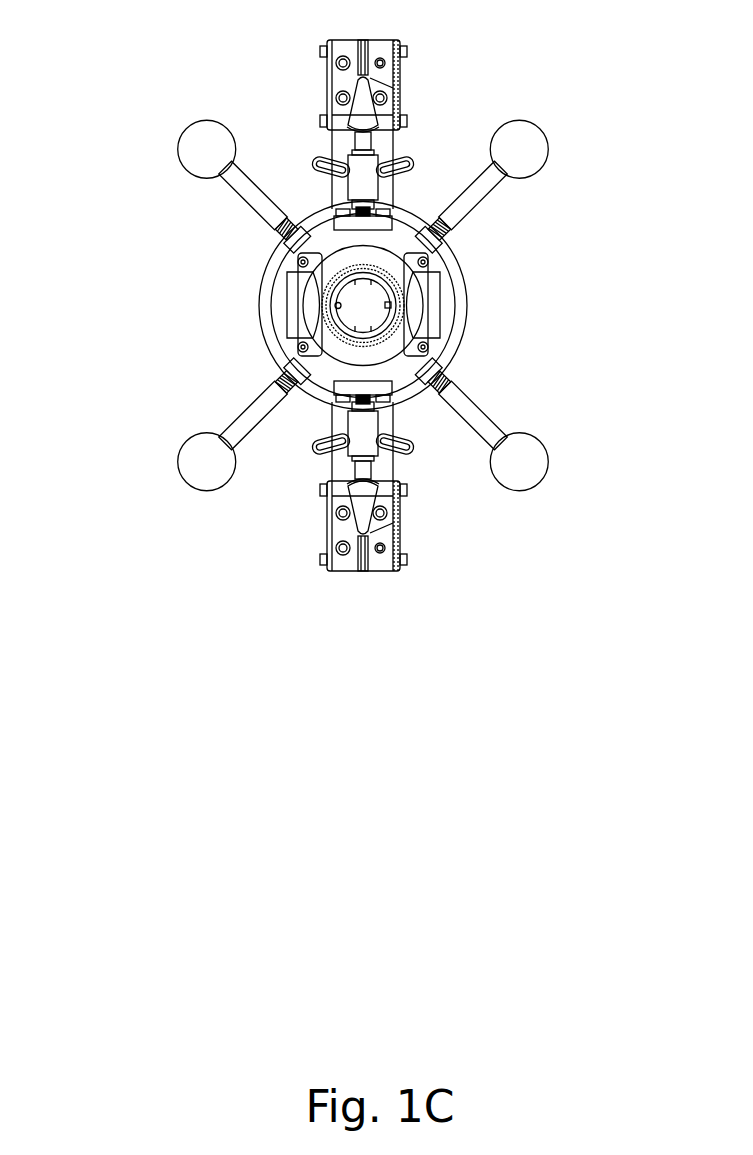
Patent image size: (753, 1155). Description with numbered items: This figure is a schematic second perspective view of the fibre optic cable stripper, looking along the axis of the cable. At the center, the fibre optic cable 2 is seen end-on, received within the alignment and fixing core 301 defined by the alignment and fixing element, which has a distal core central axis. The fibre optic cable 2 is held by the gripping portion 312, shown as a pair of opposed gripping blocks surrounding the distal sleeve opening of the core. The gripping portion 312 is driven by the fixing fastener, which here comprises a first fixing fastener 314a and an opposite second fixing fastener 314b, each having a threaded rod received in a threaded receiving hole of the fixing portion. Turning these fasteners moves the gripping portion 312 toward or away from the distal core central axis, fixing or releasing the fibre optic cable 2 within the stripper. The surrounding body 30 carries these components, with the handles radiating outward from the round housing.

The clamping base ring 30 is at (435, 293).
The fibre optic cable 2 is at (392, 326).
The gripping portion 312 is at (332, 268).
The alignment and fixing core 301 is at (361, 303).
The first fixing fastener 314a is at (365, 168).
The second fixing fastener 314b is at (360, 437).